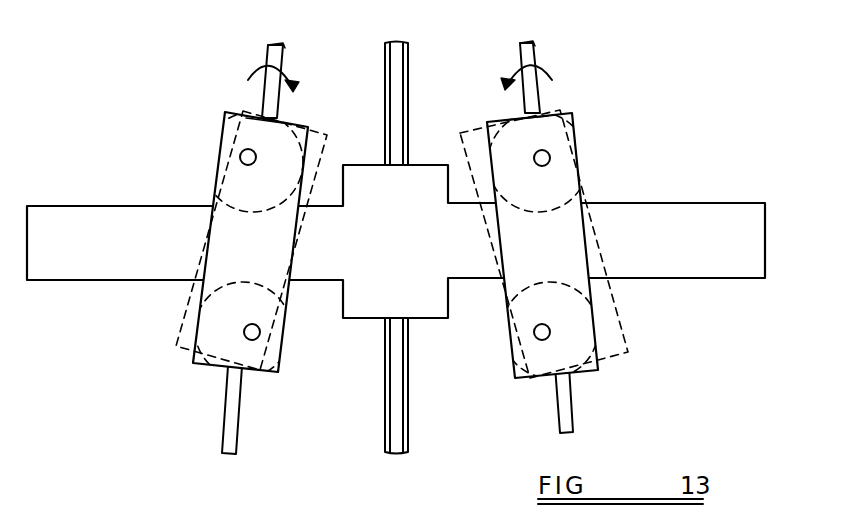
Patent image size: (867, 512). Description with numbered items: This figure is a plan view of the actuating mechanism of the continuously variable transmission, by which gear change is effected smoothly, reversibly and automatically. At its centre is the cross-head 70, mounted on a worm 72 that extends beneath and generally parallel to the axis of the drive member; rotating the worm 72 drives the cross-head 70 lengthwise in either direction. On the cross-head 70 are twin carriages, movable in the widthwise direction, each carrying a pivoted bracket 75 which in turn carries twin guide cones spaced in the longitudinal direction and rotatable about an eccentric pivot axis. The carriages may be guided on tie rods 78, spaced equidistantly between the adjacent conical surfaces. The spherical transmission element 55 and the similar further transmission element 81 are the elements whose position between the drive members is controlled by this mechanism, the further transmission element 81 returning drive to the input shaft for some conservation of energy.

The transmission element 55 is at (583, 180).
The cross-head 70 is at (688, 207).
The worm 72 is at (407, 121).
The pivoted bracket 75 is at (168, 344).
The tie rod 78 is at (238, 427).
The further transmission element 81 is at (327, 135).